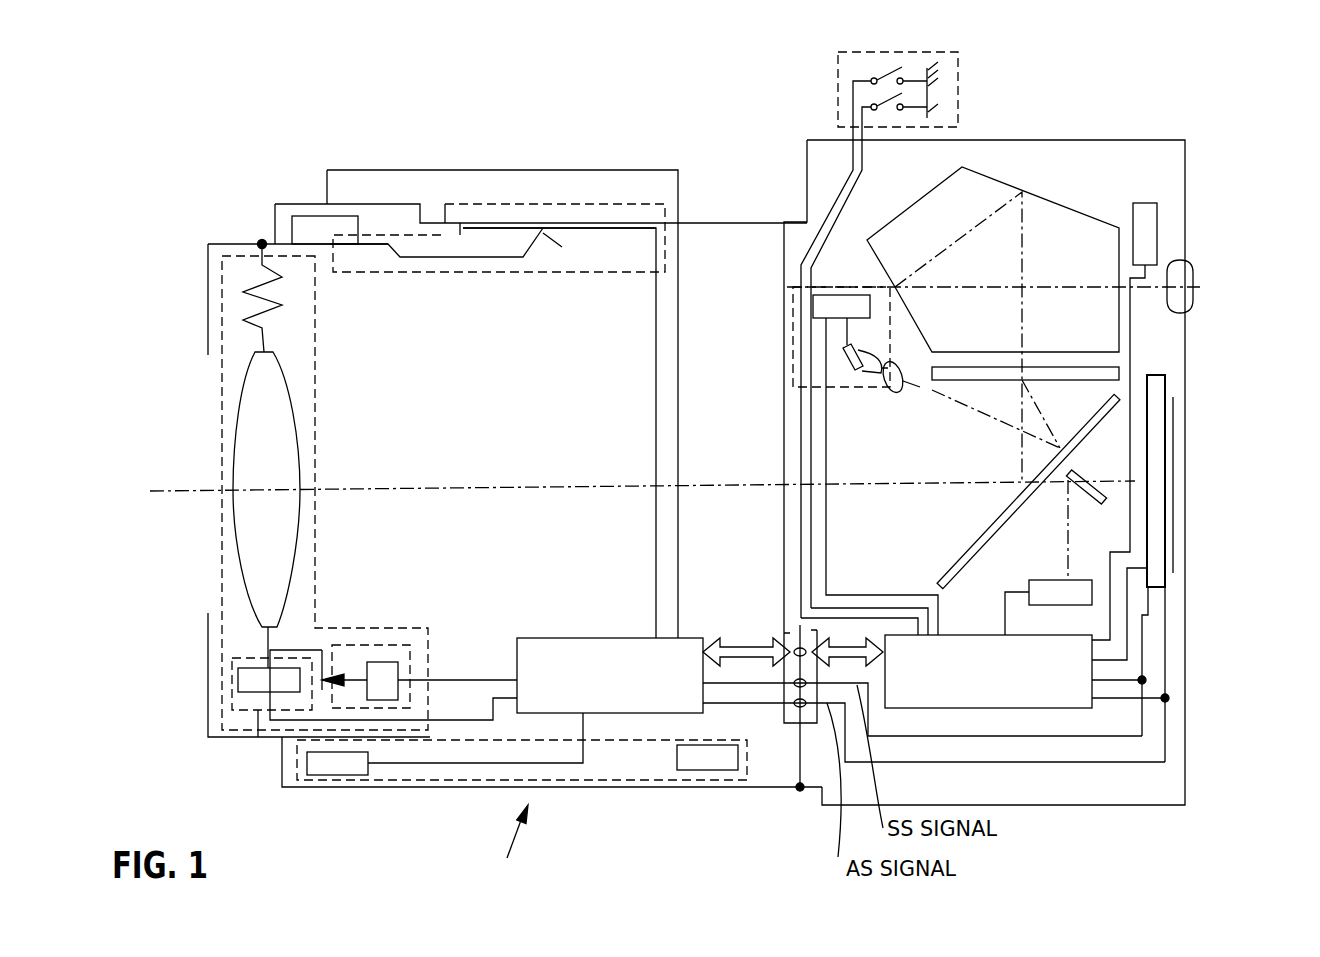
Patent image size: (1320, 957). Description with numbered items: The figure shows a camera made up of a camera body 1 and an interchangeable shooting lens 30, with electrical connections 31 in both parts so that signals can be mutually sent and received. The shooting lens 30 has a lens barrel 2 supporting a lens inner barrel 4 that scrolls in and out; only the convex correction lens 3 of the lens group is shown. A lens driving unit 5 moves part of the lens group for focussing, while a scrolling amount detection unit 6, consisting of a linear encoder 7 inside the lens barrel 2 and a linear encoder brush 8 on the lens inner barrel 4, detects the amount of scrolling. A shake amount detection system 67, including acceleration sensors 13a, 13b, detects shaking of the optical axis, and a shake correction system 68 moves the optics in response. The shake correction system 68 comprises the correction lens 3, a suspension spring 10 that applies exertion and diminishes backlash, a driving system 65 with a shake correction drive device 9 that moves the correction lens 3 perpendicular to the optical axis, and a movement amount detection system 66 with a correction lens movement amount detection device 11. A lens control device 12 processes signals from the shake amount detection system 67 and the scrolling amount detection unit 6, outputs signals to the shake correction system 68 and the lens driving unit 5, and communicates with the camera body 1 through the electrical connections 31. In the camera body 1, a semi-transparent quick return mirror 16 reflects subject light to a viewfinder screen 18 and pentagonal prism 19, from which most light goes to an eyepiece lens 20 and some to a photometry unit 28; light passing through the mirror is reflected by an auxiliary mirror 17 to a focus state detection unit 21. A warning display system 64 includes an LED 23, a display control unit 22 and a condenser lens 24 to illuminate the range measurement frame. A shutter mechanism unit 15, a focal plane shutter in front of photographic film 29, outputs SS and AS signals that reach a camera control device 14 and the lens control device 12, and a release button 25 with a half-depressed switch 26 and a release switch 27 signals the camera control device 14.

The camera body 1 is at (1220, 780).
The lens barrel 2 is at (437, 790).
The correction lens 3 is at (240, 405).
The lens inner barrel 4 is at (237, 737).
The lens driving unit 5 is at (303, 216).
The scrolling amount detection unit 6 is at (525, 203).
The linear encoder 7 is at (593, 223).
The linear encoder brush 8 is at (467, 257).
The shake correction drive device 9 is at (238, 680).
The suspension spring 10 is at (262, 265).
The correction lens movement amount detection device 11 is at (383, 662).
The lens control device 12 is at (628, 713).
The acceleration sensor 13a is at (333, 775).
The acceleration sensor 13b is at (718, 770).
The camera control device 14 is at (1007, 708).
The shutter mechanism unit 15 is at (1166, 388).
The quick return mirror 16 is at (1095, 422).
The auxiliary mirror 17 is at (1108, 495).
The viewfinder screen 18 is at (1125, 368).
The pentagonal prism 19 is at (1087, 220).
The eyepiece lens 20 is at (1193, 270).
The focus state detection unit 21 is at (1053, 580).
The display control unit 22 is at (848, 295).
The LED 23 is at (852, 362).
The condenser lens 24 is at (880, 390).
The release button 25 is at (835, 108).
The half-depressed switch 26 is at (910, 67).
The release switch 27 is at (912, 98).
The photometry unit 28 is at (1157, 218).
The photographic film 29 is at (1173, 415).
The shooting lens 30 is at (507, 851).
The electrical connections 31 is at (790, 723).
The warning display system 64 is at (822, 287).
The driving system 65 is at (258, 742).
The movement amount detection system 66 is at (410, 655).
The shake amount detection system 67 is at (757, 787).
The shake correction system 68 is at (222, 527).